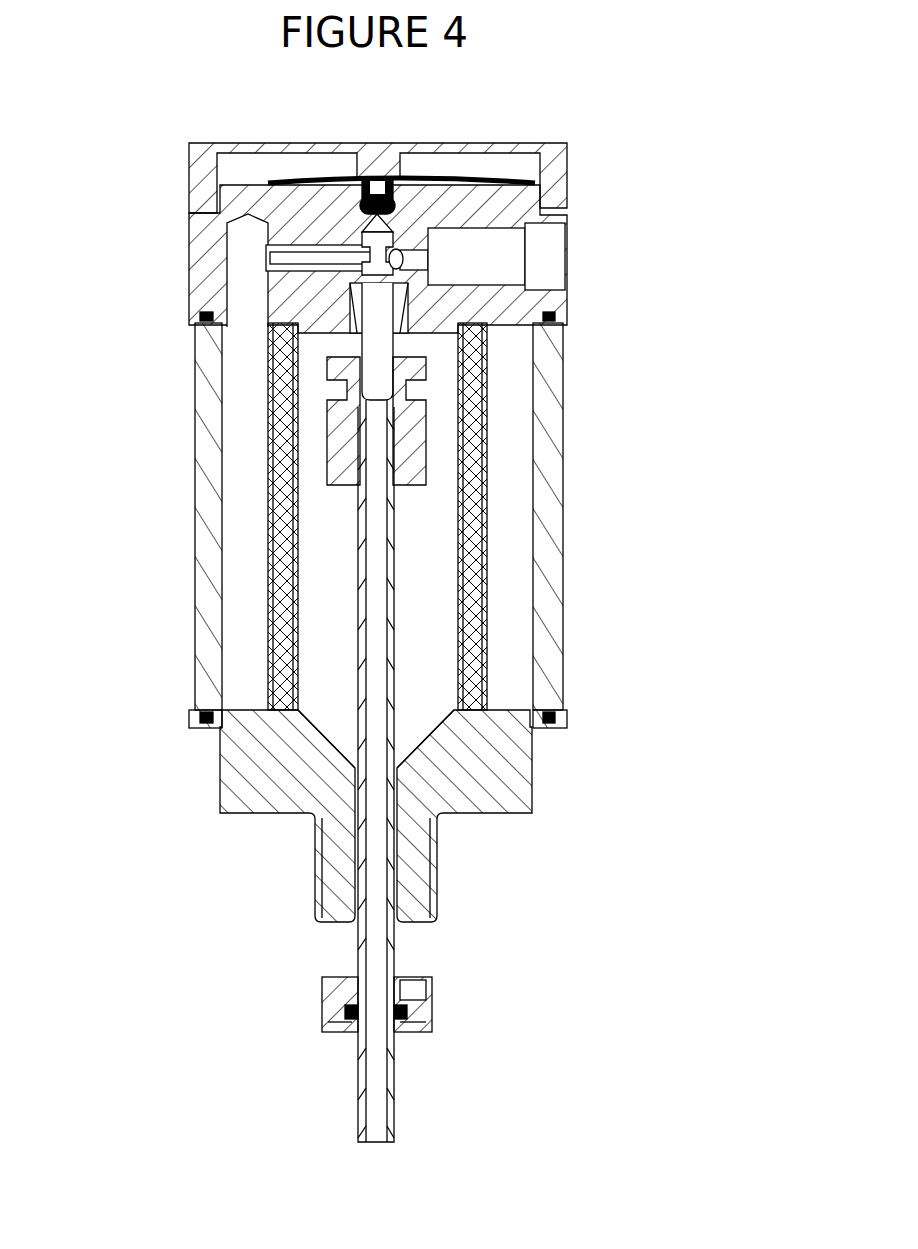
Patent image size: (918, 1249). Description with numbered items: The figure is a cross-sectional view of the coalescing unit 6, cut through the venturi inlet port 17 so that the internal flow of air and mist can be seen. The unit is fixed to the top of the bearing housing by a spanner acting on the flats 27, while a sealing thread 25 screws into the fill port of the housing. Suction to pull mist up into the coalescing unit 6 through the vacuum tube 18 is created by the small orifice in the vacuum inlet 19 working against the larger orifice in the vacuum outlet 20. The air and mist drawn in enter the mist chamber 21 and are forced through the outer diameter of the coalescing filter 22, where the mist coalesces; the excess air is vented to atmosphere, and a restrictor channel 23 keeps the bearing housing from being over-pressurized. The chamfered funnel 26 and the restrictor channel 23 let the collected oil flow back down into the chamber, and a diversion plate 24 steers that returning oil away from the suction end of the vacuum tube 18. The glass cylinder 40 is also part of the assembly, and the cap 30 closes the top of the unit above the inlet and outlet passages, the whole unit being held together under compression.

The coalescing unit 6 is at (637, 559).
The venturi inlet port 17 is at (440, 260).
The vacuum tube 18 is at (526, 739).
The vacuum inlet 19 is at (539, 201).
The vacuum outlet 20 is at (235, 179).
The mist chamber 21 is at (607, 520).
The coalescing filter 22 is at (282, 464).
The restrictor channel 23 is at (546, 868).
The diversion plate 24 is at (507, 951).
The sealing thread 25 is at (206, 868).
The chamfered funnel 26 is at (435, 752).
The flats 27 is at (202, 765).
The cap 30 is at (435, 143).
The glass cylinder 40 is at (153, 520).